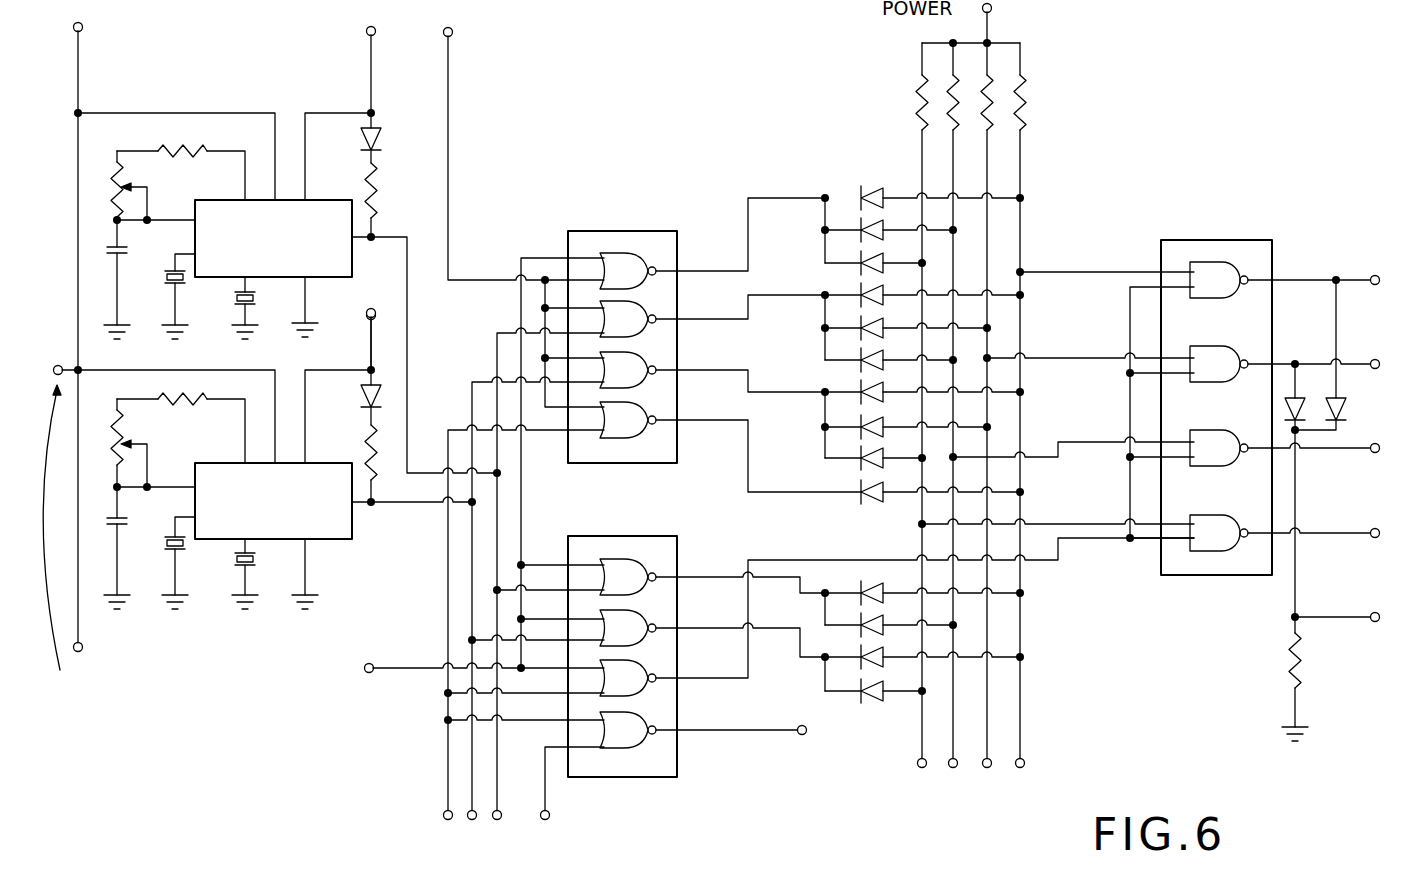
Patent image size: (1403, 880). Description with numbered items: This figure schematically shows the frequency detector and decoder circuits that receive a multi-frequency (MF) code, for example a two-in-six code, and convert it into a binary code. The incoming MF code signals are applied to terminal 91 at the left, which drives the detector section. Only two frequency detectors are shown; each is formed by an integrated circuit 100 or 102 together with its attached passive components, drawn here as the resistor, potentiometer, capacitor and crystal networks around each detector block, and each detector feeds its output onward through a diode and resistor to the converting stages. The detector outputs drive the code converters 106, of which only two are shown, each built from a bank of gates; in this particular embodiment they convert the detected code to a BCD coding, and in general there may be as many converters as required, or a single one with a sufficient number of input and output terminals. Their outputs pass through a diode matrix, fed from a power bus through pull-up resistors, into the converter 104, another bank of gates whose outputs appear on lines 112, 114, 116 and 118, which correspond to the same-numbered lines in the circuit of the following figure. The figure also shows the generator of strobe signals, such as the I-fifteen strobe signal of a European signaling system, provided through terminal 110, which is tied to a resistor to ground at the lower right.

The terminal 91 is at (58, 362).
The integrated circuit 100 is at (336, 200).
The integrated circuit 102 is at (331, 463).
The converter 104 is at (1161, 249).
The code converter 106 is at (568, 237).
The terminal 110 is at (1375, 612).
The line 112 is at (1375, 275).
The line 114 is at (1375, 359).
The line 116 is at (1375, 443).
The line 118 is at (1375, 528).